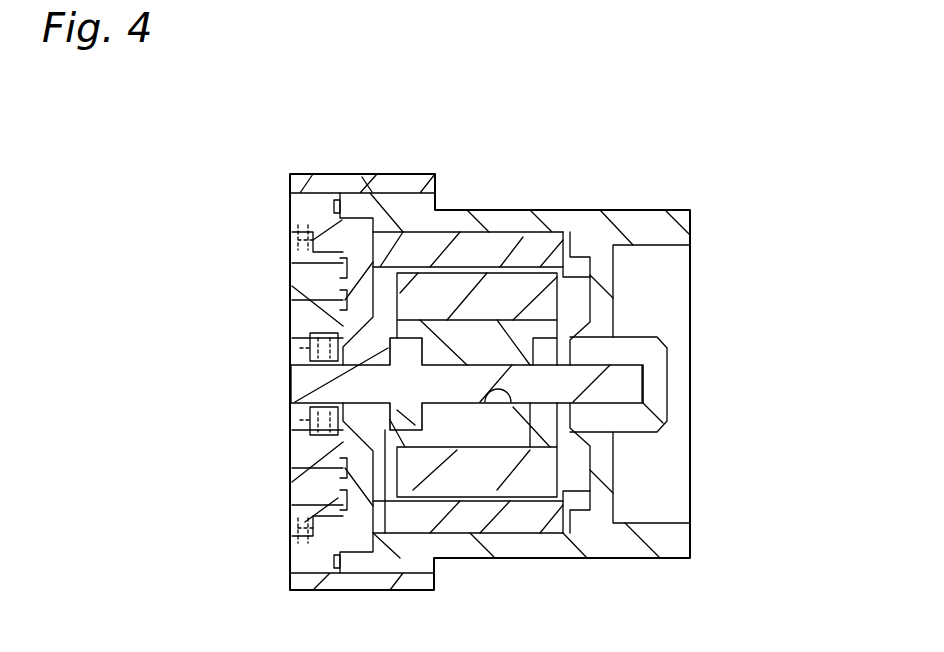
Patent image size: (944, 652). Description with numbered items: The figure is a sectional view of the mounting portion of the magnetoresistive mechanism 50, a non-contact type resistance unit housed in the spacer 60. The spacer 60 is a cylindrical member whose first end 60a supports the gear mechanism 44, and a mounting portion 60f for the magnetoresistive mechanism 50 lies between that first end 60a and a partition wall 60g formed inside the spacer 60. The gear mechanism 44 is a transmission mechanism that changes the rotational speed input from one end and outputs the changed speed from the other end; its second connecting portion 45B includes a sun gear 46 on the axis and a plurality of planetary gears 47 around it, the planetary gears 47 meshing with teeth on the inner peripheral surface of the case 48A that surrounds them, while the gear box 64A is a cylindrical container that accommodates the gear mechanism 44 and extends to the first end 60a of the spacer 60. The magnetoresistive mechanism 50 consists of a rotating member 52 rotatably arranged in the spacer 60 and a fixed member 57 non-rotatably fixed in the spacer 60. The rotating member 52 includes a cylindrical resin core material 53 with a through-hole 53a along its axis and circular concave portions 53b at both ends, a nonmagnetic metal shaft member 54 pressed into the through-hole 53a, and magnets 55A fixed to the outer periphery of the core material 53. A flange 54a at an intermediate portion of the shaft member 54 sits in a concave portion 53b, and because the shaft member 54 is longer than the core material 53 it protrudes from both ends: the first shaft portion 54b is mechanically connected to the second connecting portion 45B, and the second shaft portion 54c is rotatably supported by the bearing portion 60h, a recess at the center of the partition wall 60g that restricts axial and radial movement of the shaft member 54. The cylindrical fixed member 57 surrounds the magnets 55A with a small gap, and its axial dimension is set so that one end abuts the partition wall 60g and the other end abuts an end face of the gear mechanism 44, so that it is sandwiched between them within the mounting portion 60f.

The gear mechanism 44 is at (313, 190).
The second connecting portion 45B is at (216, 402).
The sun gear 46 is at (290, 410).
The planetary gear 47 is at (290, 250).
The case 48A is at (290, 176).
The magnetoresistive mechanism 50 is at (567, 230).
The rotating member 52 is at (548, 500).
The core material 53 is at (487, 432).
The through-hole 53a is at (517, 497).
The concave portion 53b is at (386, 537).
The shaft member 54 is at (477, 385).
The flange 54a is at (385, 420).
The first shaft portion 54b is at (290, 383).
The second shaft portion 54c is at (620, 387).
The magnet 55A is at (447, 482).
The fixed member 57 is at (413, 250).
The spacer 60 is at (693, 206).
The first end 60a is at (336, 208).
The mounting portion 60f is at (620, 472).
The partition wall 60g is at (618, 292).
The bearing portion 60h is at (652, 367).
The gear box 64A is at (362, 177).